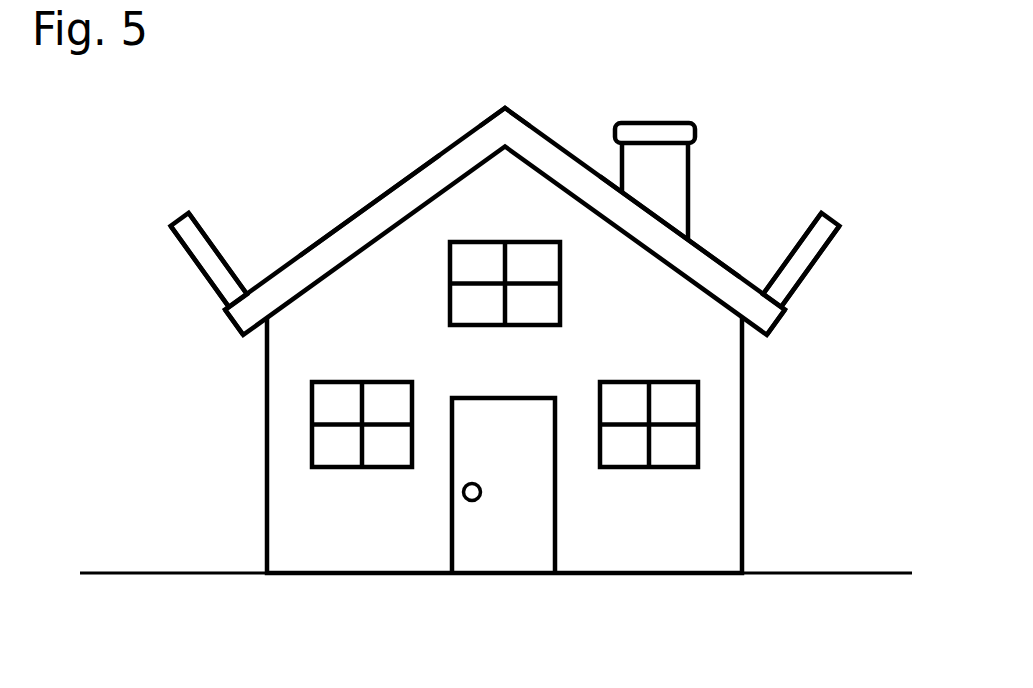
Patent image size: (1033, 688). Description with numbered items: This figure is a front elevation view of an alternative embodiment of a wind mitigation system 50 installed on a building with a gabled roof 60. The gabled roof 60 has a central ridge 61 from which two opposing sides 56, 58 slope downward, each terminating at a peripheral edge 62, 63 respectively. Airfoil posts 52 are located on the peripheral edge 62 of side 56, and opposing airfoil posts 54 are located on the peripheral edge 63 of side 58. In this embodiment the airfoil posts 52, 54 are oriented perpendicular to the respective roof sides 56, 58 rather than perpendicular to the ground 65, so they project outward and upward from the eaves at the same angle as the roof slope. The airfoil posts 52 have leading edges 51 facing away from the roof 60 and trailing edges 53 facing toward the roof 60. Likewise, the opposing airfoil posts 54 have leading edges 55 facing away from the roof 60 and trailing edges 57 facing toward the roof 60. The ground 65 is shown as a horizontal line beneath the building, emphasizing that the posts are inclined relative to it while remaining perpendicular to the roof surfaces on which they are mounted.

The wind mitigation system 50 is at (812, 87).
The leading edges 51 is at (198, 268).
The airfoil posts 52 is at (148, 257).
The trailing edges 53 is at (234, 274).
The opposing airfoil posts 54 is at (872, 249).
The leading edges 55 is at (805, 290).
The side 56 is at (377, 200).
The trailing edges 57 is at (807, 232).
The side 58 is at (713, 257).
The gabled roof 60 is at (416, 116).
The central ridge 61 is at (507, 108).
The peripheral edge 62 is at (238, 327).
The peripheral edge 63 is at (766, 338).
The ground 65 is at (197, 572).